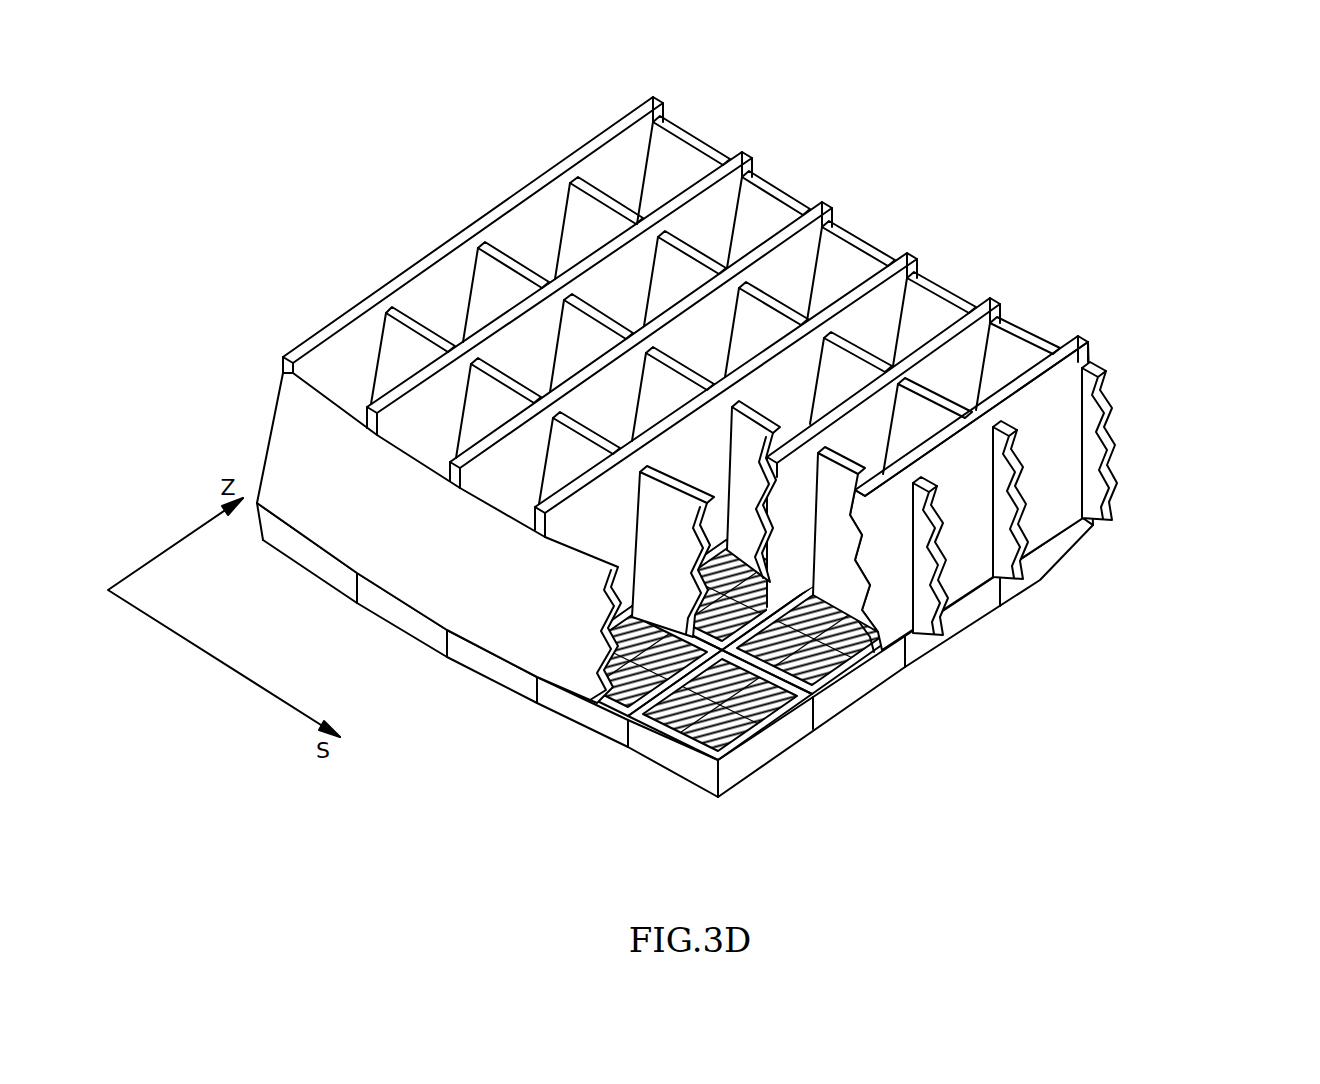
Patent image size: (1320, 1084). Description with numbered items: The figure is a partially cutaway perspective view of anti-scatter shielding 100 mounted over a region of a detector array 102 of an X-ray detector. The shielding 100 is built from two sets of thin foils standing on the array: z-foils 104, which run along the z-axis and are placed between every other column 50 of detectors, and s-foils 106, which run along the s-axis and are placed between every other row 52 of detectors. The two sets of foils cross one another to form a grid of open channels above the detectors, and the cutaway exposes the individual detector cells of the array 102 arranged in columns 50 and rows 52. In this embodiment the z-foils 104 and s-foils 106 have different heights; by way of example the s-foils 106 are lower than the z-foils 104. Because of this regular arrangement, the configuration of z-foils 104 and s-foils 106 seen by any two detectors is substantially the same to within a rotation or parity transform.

The AS shielding 100 is at (777, 376).
The detector array 102 is at (775, 666).
The z-foils 104 is at (653, 98).
The s-foils 106 is at (767, 308).
The column 50 is at (600, 713).
The row 52 is at (747, 757).